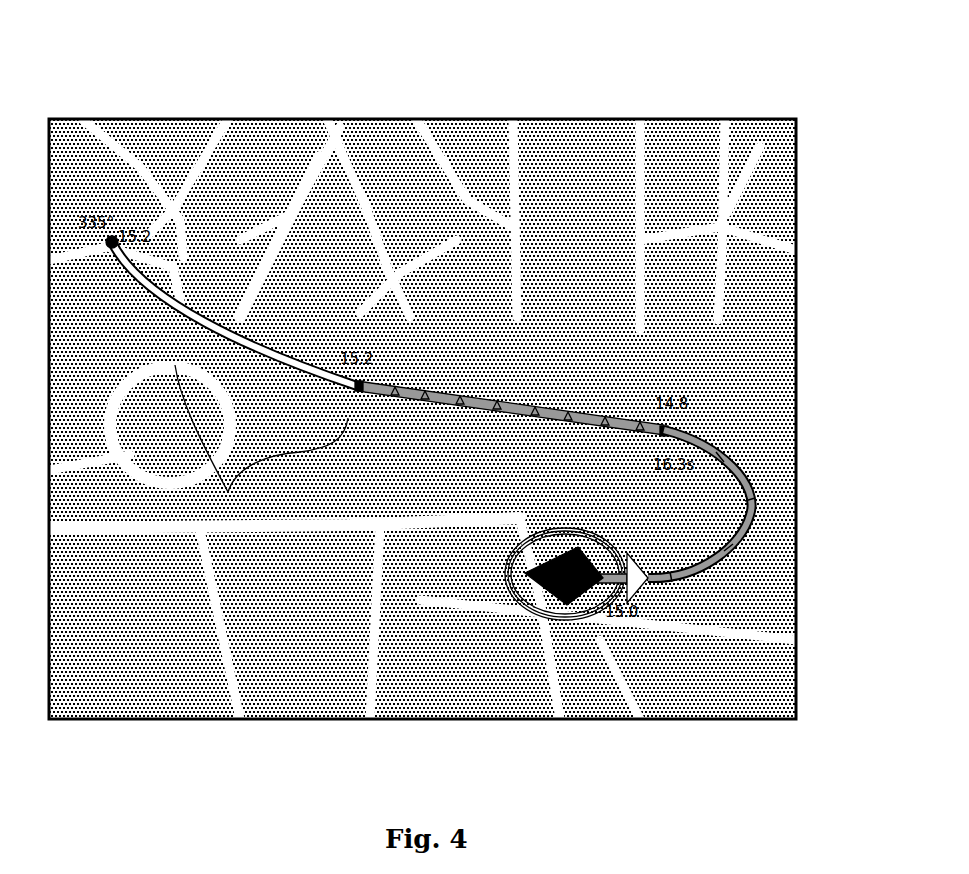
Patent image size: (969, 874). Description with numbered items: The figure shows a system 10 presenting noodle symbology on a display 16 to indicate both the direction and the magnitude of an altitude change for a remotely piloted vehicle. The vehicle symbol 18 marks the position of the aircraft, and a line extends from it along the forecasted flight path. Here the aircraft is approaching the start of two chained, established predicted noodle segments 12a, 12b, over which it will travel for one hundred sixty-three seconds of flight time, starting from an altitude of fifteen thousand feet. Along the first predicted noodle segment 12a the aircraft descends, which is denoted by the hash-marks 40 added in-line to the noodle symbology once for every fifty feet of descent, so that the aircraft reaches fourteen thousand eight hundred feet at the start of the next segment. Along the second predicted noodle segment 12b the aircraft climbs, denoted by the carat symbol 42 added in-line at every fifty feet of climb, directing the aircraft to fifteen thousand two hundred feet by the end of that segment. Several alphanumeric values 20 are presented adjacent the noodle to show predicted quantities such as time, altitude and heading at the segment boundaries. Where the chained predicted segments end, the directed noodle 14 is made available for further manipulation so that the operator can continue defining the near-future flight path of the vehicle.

The system 10 is at (426, 74).
The display 16 is at (565, 117).
The directed noodle 14 is at (253, 330).
The carat symbol 42 is at (498, 402).
The predicted noodle segment 12b is at (590, 408).
The predicted noodle segment 12a is at (724, 452).
The hash-marks 40 is at (648, 584).
The alphanumeric values 20 is at (228, 492).
The vehicle symbol 18 is at (573, 606).